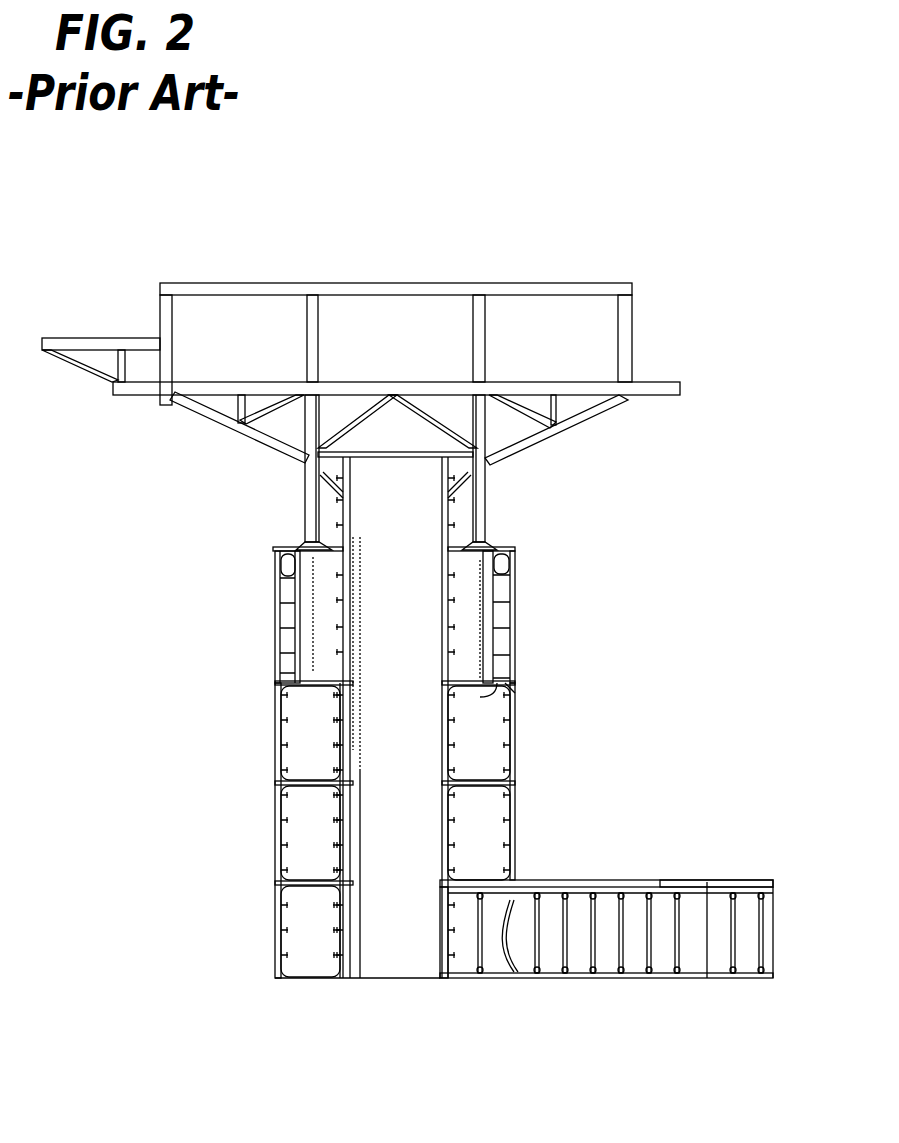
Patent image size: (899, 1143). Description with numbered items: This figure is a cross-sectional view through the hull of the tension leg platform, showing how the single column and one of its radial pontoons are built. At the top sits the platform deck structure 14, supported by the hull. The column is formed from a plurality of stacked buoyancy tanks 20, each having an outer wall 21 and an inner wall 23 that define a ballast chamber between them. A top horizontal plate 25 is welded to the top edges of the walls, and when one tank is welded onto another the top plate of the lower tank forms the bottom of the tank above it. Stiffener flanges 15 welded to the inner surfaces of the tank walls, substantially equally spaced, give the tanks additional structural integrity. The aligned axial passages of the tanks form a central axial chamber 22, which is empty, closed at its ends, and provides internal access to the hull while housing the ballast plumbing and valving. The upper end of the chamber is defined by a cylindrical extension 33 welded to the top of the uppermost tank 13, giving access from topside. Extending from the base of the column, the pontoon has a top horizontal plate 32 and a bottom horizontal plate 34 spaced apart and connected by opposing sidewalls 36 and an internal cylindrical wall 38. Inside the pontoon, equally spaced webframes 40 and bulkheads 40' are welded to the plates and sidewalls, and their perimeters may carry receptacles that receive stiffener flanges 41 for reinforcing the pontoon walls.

The uppermost tank 13 is at (524, 611).
The platform deck structure 14 is at (640, 324).
The stiffener flanges 15 is at (280, 716).
The buoyancy tanks 20 is at (516, 780).
The outer wall 21 is at (518, 838).
The central axial chamber 22 is at (370, 588).
The inner wall 23 is at (452, 755).
The top horizontal plate 25 is at (513, 693).
The top horizontal plate 32 is at (586, 881).
The cylindrical extension 33 is at (317, 512).
The bottom horizontal plate 34 is at (551, 979).
The sidewalls 36 is at (523, 950).
The internal cylindrical wall 38 is at (437, 935).
The webframes 40 is at (637, 960).
The bulkheads 40' is at (550, 982).
The stiffener flanges 41 is at (666, 892).